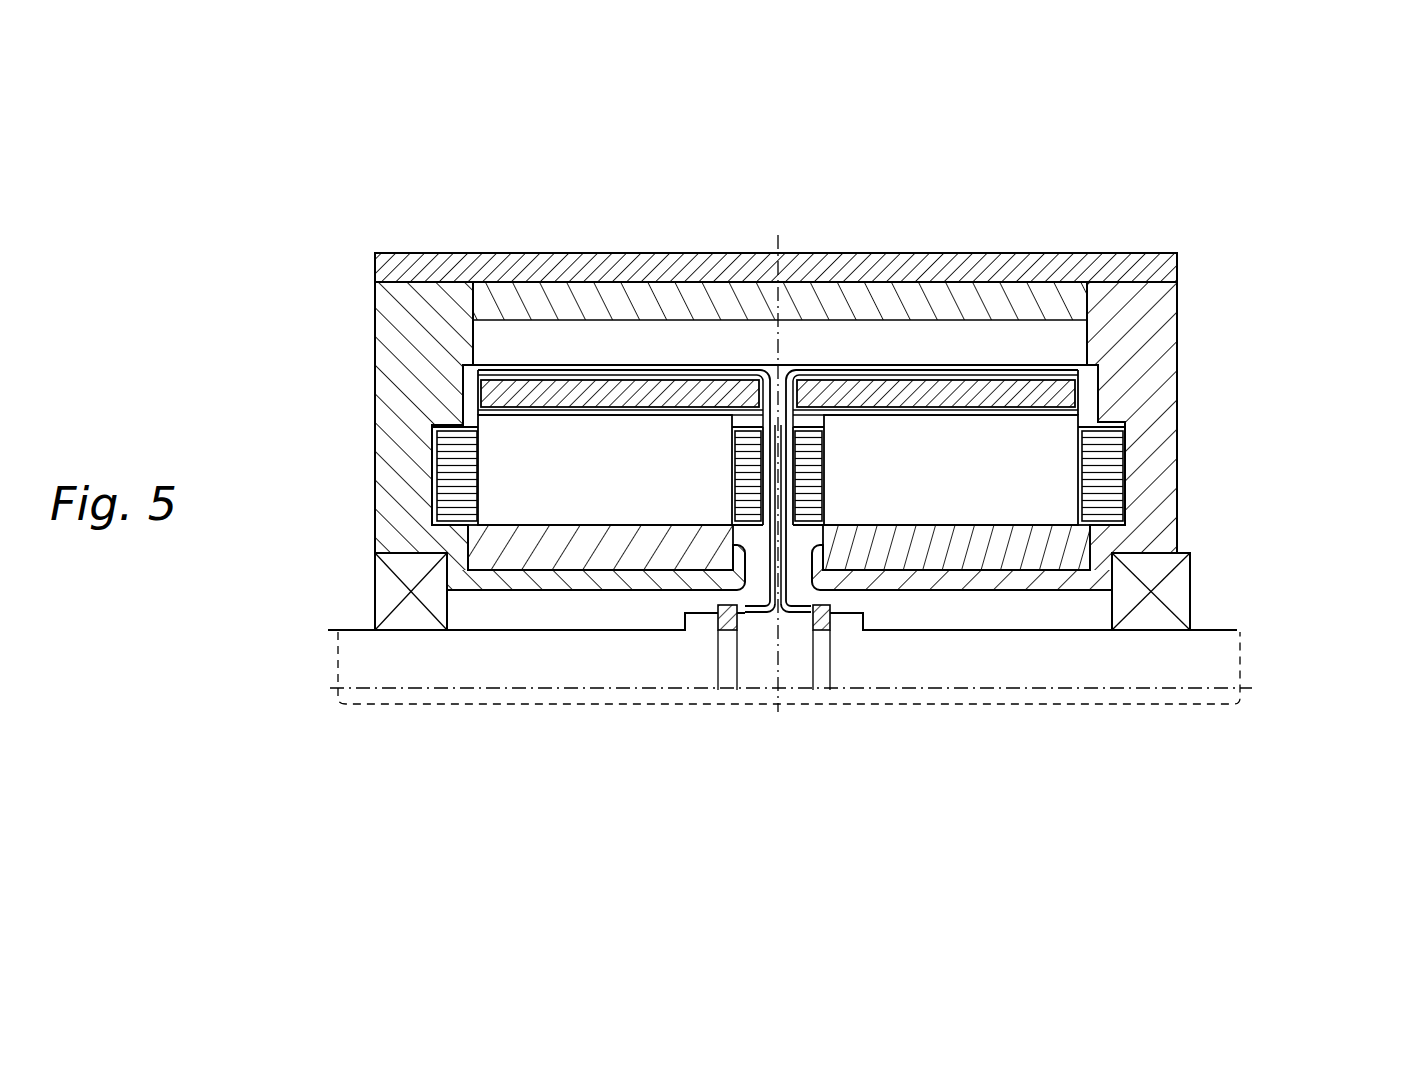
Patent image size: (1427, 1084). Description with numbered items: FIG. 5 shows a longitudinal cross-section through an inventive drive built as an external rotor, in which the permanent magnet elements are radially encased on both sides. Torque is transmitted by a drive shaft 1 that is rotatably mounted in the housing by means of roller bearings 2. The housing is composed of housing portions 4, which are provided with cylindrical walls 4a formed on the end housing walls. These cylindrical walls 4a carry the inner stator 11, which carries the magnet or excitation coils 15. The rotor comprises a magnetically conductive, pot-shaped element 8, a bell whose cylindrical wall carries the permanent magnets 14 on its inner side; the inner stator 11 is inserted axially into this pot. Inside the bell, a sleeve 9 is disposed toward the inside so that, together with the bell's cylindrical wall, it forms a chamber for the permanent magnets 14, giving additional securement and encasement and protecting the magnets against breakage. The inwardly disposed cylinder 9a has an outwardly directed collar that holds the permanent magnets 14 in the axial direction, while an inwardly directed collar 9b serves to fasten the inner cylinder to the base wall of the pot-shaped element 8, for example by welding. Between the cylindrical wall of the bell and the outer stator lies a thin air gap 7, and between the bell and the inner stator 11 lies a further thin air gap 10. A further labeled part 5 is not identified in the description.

The drive shaft 1 is at (1228, 665).
The roller bearings 2 is at (1173, 590).
The housing portions 4 is at (1157, 413).
The cylindrical walls 4a is at (997, 580).
The permanent magnet (left) 5 is at (628, 378).
The air gap 7 is at (714, 368).
The pot-shaped element 8 is at (945, 395).
The sleeve 9 is at (557, 406).
The inwardly disposed cylinder 9a is at (477, 398).
The inwardly directed collar 9b is at (792, 420).
The air gap 10 is at (643, 413).
The inner stator 11 is at (913, 487).
The permanent magnets 14 is at (1013, 378).
The excitation coils 15 is at (450, 497).